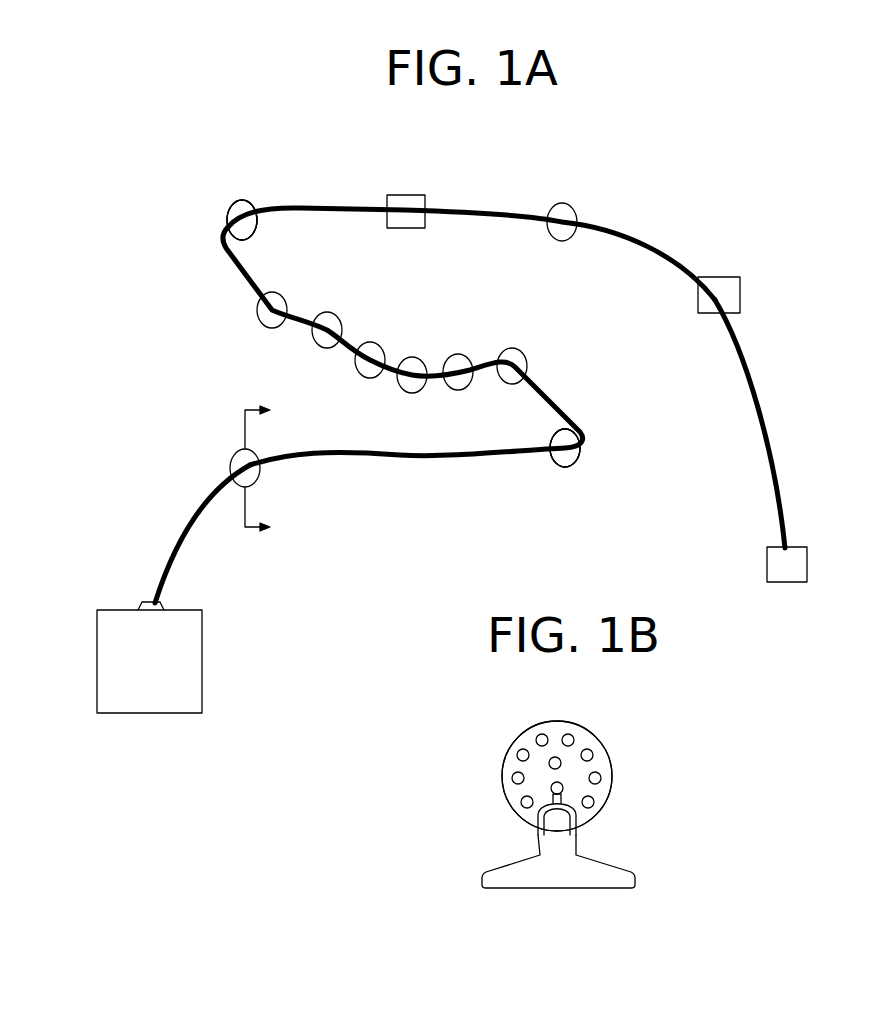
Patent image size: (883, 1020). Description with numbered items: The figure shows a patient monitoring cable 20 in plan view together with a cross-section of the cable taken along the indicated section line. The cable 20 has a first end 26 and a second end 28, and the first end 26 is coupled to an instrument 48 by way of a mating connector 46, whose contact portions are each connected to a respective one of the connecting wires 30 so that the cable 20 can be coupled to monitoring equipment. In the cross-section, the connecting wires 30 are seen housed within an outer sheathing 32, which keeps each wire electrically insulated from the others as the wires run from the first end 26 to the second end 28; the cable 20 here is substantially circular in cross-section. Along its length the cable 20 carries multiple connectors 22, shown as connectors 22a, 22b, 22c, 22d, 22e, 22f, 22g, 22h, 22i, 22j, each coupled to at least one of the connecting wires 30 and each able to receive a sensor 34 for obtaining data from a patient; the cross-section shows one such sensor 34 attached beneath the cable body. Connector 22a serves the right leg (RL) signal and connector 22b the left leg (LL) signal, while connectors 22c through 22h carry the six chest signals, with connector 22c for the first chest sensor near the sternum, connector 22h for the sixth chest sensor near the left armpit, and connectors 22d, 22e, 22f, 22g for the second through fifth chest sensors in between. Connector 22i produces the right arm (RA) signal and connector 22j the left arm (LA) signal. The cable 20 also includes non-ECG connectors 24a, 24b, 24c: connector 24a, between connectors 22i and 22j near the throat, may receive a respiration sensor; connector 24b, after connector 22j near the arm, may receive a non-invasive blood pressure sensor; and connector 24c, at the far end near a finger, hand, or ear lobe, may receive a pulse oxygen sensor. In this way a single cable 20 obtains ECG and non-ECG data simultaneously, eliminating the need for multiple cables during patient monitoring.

In FIG. 1A, the monitoring cable 20 is at (371, 458).
In FIG. 1B, the monitoring cable 20 is at (605, 750).
In FIG. 1A, the connectors 22 is at (226, 215).
In FIG. 1B, the connectors 22 is at (540, 828).
In FIG. 1A, the connector 22a is at (236, 455).
In FIG. 1A, the connector 22b is at (582, 445).
In FIG. 1A, the connector 22c is at (258, 318).
In FIG. 1A, the connector 22d is at (318, 340).
In FIG. 1A, the connector 22e is at (362, 372).
In FIG. 1A, the connector 22f is at (404, 387).
In FIG. 1A, the connector 22g is at (456, 390).
In FIG. 1A, the connector 22h is at (509, 384).
In FIG. 1A, the connector 22i is at (252, 203).
In FIG. 1A, the connector 22j is at (567, 203).
In FIG. 1A, the connector 24a is at (405, 195).
In FIG. 1A, the connector 24b is at (740, 294).
In FIG. 1A, the connector 24c is at (807, 563).
In FIG. 1A, the first end 26 is at (190, 524).
In FIG. 1A, the second end 28 is at (778, 474).
In FIG. 1B, the connecting wires 30 is at (520, 750).
In FIG. 1B, the outer sheathing 32 is at (510, 768).
In FIG. 1A, the sensor 34 is at (236, 204).
In FIG. 1B, the sensor 34 is at (528, 888).
In FIG. 1A, the mating connector 46 is at (136, 603).
In FIG. 1A, the instrument 48 is at (203, 660).